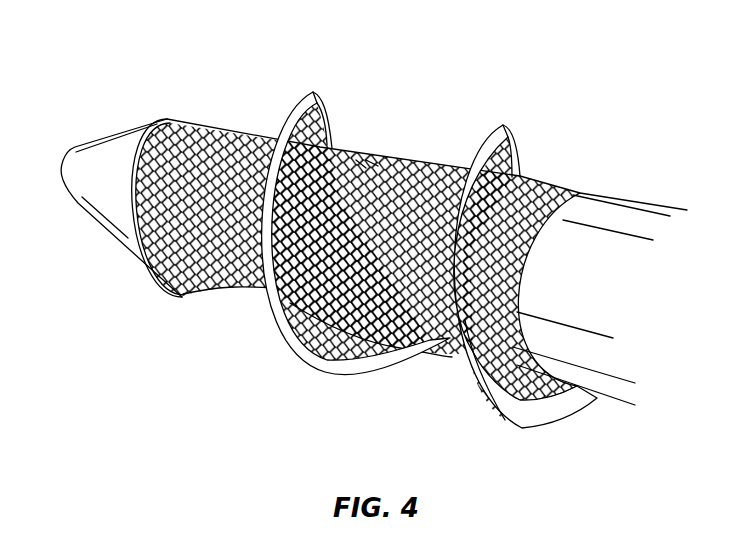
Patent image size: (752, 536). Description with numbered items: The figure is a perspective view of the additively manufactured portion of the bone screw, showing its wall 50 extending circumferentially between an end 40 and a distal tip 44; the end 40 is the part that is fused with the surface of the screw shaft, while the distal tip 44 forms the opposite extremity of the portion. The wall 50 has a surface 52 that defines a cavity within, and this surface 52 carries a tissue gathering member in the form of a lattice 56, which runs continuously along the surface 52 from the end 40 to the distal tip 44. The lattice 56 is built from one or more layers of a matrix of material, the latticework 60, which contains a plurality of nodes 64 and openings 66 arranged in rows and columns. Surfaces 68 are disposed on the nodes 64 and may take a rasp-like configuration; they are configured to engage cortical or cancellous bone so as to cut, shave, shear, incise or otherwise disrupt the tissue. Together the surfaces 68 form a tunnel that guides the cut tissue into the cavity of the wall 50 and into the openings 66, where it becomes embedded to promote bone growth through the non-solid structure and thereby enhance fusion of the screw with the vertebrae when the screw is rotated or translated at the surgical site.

The end 40 is at (636, 228).
The distal tip 44 is at (93, 157).
The wall 50 is at (597, 215).
The surface 52 is at (553, 345).
The lattice 56 is at (411, 221).
The latticework 60 is at (351, 166).
The nodes 64 is at (372, 167).
The openings 66 is at (362, 164).
The surfaces 68 is at (343, 150).